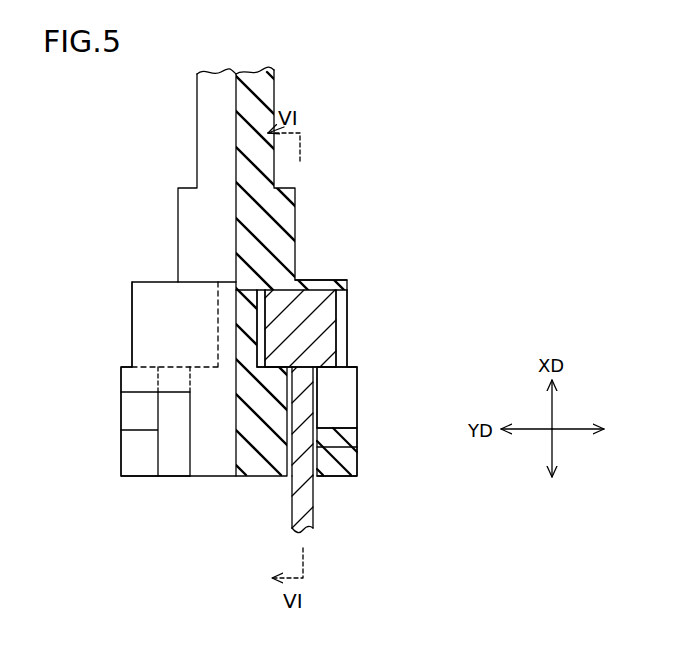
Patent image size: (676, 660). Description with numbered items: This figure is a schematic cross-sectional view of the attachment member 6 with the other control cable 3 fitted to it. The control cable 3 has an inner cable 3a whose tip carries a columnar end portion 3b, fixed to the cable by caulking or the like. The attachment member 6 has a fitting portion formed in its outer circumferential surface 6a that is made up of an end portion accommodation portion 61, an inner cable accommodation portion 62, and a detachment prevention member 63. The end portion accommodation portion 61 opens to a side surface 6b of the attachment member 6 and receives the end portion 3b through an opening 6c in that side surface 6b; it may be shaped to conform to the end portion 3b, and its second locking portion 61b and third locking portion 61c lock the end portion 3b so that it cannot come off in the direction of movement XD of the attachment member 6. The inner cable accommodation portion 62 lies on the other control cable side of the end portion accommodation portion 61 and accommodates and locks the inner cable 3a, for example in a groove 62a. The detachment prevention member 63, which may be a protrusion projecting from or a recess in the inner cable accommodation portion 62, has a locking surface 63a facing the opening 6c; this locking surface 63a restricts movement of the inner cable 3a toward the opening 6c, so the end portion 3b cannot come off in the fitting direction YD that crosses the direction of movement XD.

The attachment member 6 is at (134, 155).
The outer circumferential surface 6a is at (156, 345).
The side surface 6b is at (347, 312).
The opening 6c is at (343, 333).
The end portion accommodation portion 61 is at (338, 286).
The second locking portion 61b is at (347, 359).
The third locking portion 61c is at (300, 281).
The inner cable accommodation portion 62 is at (343, 417).
The groove 62a is at (318, 404).
The detachment prevention member 63 is at (348, 463).
The locking surface 63a is at (345, 450).
The control cable 3 is at (300, 510).
The inner cable 3a is at (298, 380).
The end portion 3b is at (300, 318).